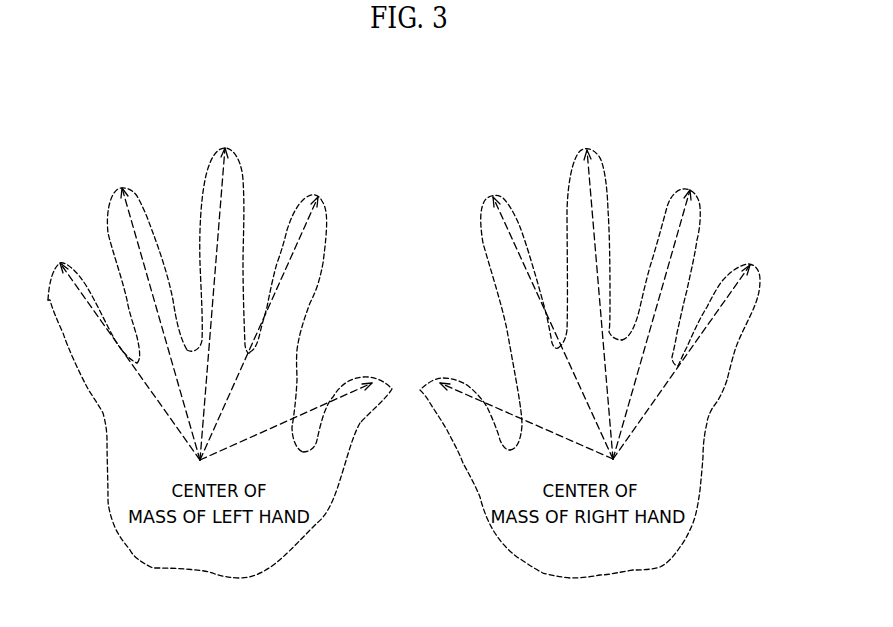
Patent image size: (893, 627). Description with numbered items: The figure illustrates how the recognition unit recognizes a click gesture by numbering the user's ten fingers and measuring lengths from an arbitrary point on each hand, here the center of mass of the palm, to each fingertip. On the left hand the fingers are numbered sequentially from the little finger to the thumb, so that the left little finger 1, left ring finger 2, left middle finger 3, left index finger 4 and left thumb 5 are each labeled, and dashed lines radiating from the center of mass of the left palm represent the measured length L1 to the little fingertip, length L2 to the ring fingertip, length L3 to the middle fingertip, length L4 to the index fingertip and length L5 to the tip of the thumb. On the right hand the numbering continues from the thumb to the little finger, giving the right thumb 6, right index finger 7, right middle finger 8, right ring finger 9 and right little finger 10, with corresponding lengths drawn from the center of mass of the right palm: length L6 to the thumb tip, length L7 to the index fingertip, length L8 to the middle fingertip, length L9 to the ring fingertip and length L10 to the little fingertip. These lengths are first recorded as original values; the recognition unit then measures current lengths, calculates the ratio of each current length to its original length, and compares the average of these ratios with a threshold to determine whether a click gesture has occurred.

The left little finger 1 is at (83, 298).
The left ring finger 2 is at (145, 258).
The left middle finger 3 is at (226, 233).
The left index finger 4 is at (308, 307).
The left thumb 5 is at (352, 397).
The right thumb 6 is at (465, 406).
The right index finger 7 is at (514, 306).
The right middle finger 8 is at (593, 230).
The right ring finger 9 is at (682, 259).
The right little finger 10 is at (732, 306).
The length to left little fingertip L1 is at (130, 361).
The length to left ring fingertip L2 is at (160, 324).
The length to left middle fingertip L3 is at (210, 304).
The length to left index fingertip L4 is at (259, 328).
The length to left thumb tip L5 is at (286, 421).
The length to right thumb tip L6 is at (526, 421).
The length to right index fingertip L7 is at (553, 328).
The length to right middle fingertip L8 is at (583, 304).
The length to right ring fingertip L9 is at (652, 324).
The length to right little fingertip L10 is at (681, 362).